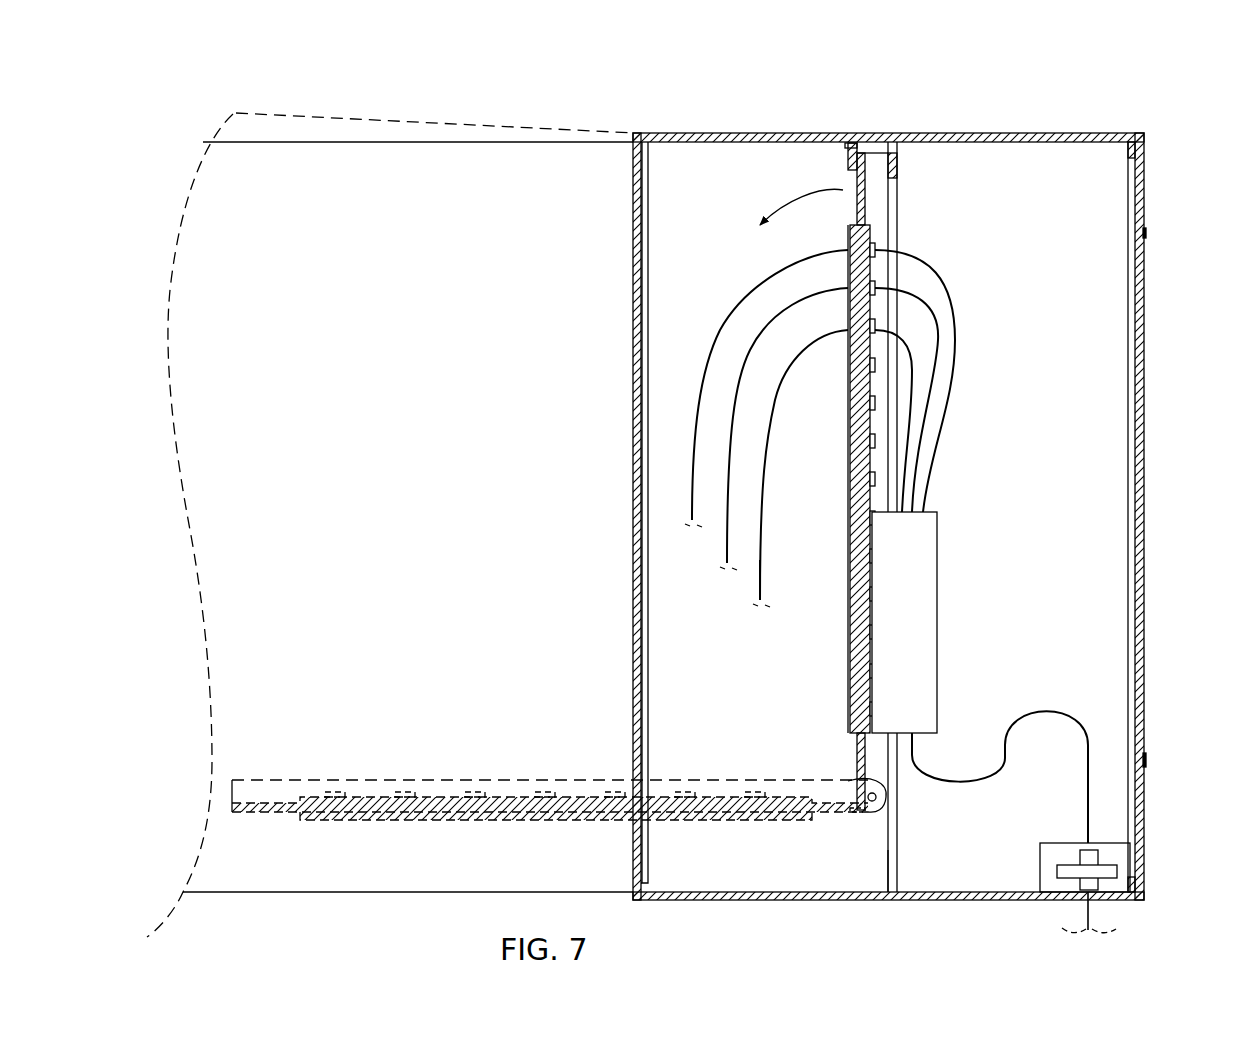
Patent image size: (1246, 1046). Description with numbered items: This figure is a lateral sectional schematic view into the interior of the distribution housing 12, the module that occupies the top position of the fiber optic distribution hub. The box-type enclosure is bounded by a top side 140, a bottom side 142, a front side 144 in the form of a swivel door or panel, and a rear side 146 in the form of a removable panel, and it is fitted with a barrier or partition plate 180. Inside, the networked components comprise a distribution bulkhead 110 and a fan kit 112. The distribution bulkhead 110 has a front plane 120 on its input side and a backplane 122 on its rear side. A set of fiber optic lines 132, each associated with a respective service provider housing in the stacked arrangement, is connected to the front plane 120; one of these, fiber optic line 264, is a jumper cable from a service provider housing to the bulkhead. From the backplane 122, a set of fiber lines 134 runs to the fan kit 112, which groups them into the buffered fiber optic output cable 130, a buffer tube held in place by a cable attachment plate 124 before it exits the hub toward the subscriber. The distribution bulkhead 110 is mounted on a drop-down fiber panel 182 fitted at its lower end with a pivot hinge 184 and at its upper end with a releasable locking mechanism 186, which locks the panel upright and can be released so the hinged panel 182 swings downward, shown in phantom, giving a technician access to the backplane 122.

The distribution housing 12 is at (600, 130).
The distribution bulkhead 110 is at (872, 227).
The fan kit 112 is at (942, 610).
The front plane 120 is at (845, 410).
The backplane 122 is at (878, 446).
The cable attachment plate 124 is at (1033, 870).
The buffered fiber optic output cable 130 is at (1090, 785).
The set of fiber optic lines 132 is at (770, 442).
The set of fiber lines 134 is at (950, 392).
The top side 140 is at (1075, 140).
The bottom side 142 is at (770, 900).
The front side 144 is at (630, 573).
The rear side 146 is at (1141, 288).
The partition plate 180 is at (887, 850).
The drop-down fiber panel 182 is at (857, 752).
The pivot hinge 184 is at (870, 813).
The releasable locking mechanism 186 is at (843, 156).
The fiber optic line 264 is at (760, 565).